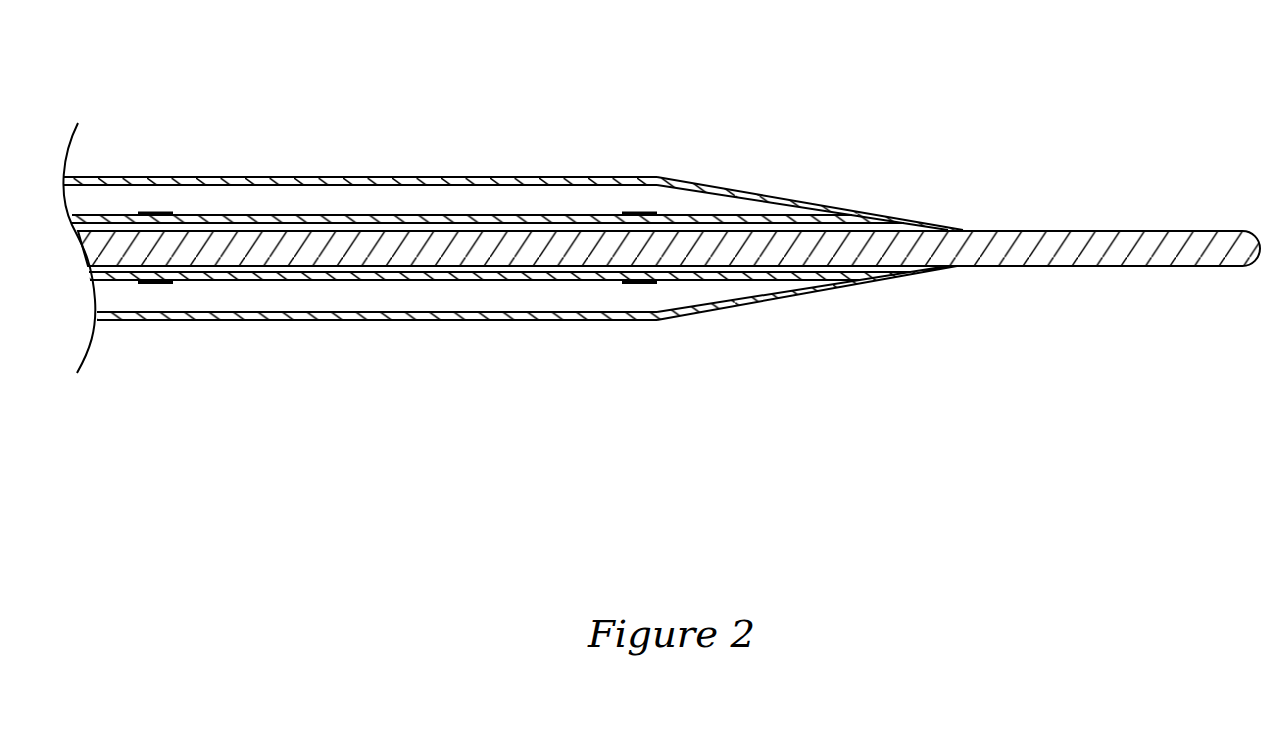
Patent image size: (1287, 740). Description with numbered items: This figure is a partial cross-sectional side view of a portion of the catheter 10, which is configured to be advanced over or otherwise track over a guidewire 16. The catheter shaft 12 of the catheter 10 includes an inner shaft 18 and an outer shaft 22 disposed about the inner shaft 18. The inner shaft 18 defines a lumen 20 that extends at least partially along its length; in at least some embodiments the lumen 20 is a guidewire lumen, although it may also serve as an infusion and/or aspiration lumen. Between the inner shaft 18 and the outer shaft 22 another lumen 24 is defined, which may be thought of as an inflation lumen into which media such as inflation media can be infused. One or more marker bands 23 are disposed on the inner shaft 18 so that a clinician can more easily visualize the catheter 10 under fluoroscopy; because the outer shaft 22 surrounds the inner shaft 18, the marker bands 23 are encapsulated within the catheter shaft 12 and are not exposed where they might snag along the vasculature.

The catheter 10 is at (537, 100).
The catheter shaft 12 is at (171, 165).
The guidewire 16 is at (1092, 242).
The inner shaft 18 is at (434, 216).
The lumen 20 is at (558, 227).
The outer shaft 22 is at (300, 177).
The marker bands 23 is at (155, 285).
The lumen 24 is at (667, 200).